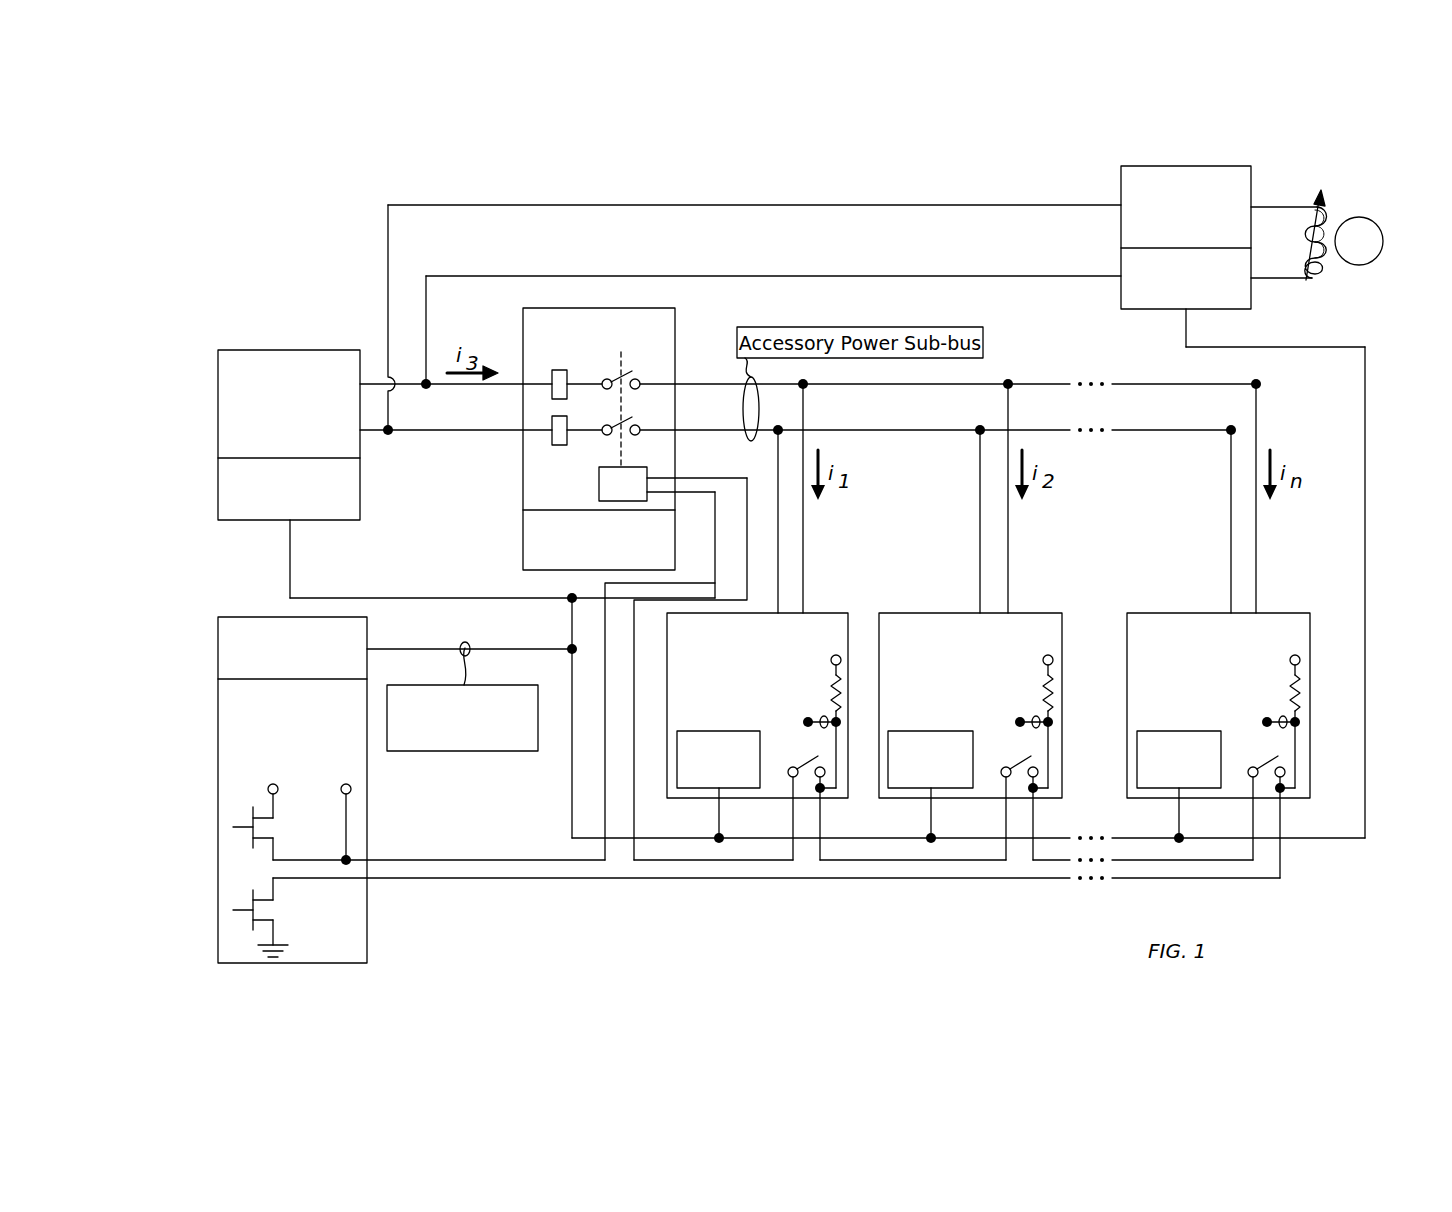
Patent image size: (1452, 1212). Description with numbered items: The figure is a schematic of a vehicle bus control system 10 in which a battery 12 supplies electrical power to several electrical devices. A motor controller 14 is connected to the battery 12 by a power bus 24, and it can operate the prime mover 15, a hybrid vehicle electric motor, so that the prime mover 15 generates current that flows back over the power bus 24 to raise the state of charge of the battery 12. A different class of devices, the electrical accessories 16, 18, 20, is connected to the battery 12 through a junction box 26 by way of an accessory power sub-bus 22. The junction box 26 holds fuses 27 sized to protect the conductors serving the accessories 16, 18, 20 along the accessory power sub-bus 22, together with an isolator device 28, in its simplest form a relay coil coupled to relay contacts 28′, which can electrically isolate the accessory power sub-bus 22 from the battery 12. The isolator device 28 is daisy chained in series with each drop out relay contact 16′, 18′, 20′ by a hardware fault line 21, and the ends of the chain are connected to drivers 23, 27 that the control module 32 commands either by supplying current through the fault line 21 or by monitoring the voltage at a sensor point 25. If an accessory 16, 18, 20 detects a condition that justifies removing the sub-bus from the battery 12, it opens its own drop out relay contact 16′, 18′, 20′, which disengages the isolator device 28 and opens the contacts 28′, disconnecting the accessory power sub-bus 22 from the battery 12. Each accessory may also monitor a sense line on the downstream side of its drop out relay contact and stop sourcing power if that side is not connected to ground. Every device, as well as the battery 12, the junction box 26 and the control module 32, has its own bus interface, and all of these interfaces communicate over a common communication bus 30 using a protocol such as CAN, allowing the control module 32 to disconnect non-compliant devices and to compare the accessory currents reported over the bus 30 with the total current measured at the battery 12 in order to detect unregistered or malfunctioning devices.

The vehicle bus control system 10 is at (236, 215).
The battery 12 is at (218, 364).
The motor controller 14 is at (1121, 180).
The prime mover 15 is at (1384, 242).
The electrical accessory 16 is at (835, 613).
The drop out relay contact 16′ is at (806, 766).
The electrical accessory 18 is at (1047, 613).
The drop out relay contact 18′ is at (1018, 766).
The electrical accessory 20 is at (1295, 613).
The drop out relay contact 20′ is at (1266, 766).
The hardware fault line 21 is at (980, 875).
The accessory power sub-bus 22 is at (948, 423).
The driver 23 is at (245, 923).
The power bus 24 is at (883, 205).
The sensor point 25 is at (346, 808).
The junction box 26 is at (523, 318).
The fuses / driver 27 is at (552, 390).
The isolator device 28 is at (630, 496).
The relay contacts 28′ is at (622, 376).
The communication bus 30 is at (423, 652).
The control module 32 is at (218, 712).